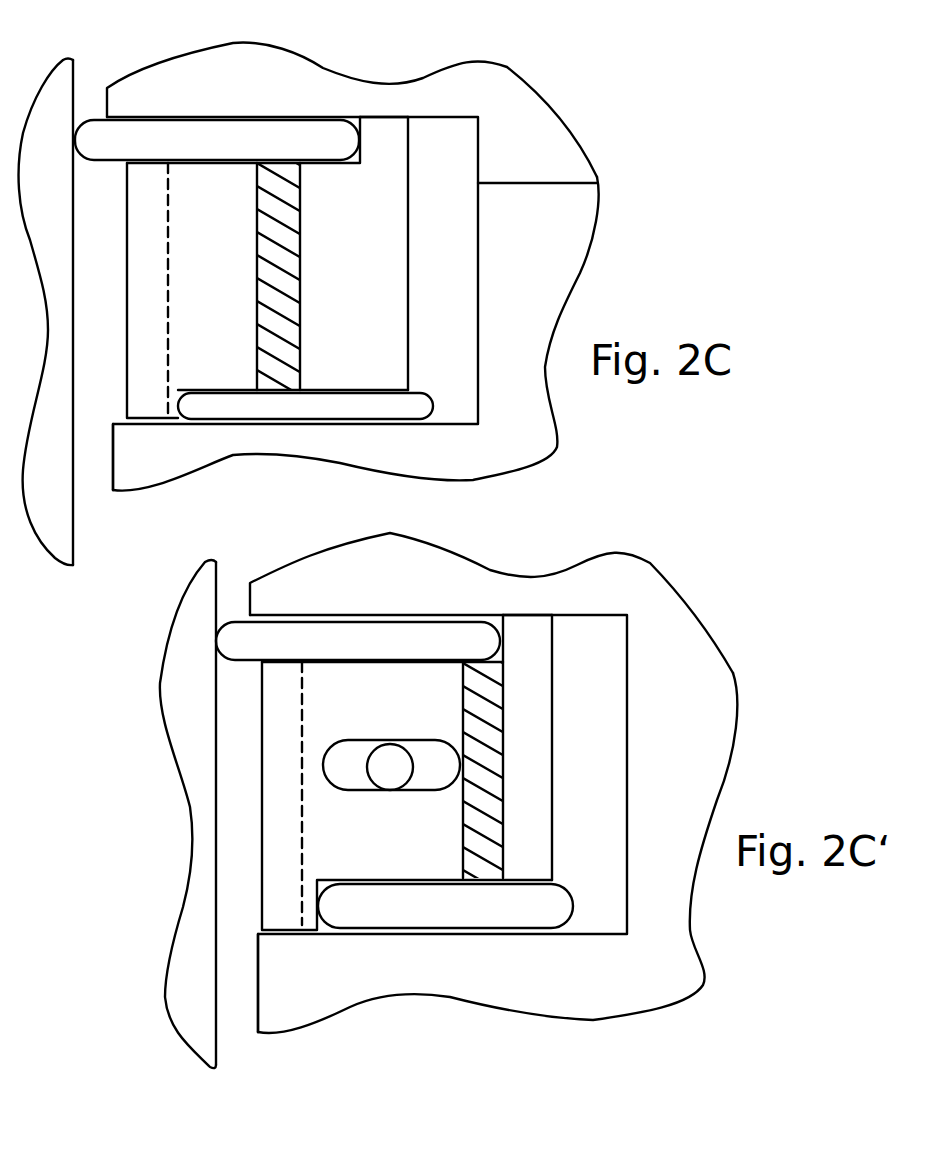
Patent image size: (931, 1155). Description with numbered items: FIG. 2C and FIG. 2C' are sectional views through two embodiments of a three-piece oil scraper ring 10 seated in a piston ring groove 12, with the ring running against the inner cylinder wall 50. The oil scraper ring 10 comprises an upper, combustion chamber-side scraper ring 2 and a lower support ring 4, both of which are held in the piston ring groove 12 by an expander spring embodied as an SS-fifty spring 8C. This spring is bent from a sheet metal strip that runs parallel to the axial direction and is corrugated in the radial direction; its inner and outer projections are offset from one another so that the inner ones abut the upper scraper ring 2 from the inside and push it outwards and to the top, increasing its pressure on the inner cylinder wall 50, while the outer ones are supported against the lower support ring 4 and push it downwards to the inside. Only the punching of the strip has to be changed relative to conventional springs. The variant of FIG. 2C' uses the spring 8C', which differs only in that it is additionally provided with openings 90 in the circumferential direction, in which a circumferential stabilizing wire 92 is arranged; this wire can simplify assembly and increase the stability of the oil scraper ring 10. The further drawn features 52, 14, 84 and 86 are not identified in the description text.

In FIG. 2C, the oil scraper ring 10 is at (613, 60).
In FIG. 2C', the oil scraper ring 10 is at (762, 557).
In FIG. 2C, the inner cylinder wall 50 is at (46, 312).
In FIG. 2C', the inner cylinder wall 50 is at (780, 660).
In FIG. 2C, the housing upper portion 52 is at (352, 110).
In FIG. 2C', the housing upper portion 52 is at (491, 603).
In FIG. 2C, the housing body 14 is at (597, 165).
In FIG. 2C', the housing body 14 is at (497, 853).
In FIG. 2C, the piston ring groove 12 is at (436, 253).
In FIG. 2C', the piston ring groove 12 is at (582, 747).
In FIG. 2C, the upper scraper ring 2 is at (217, 140).
In FIG. 2C', the upper scraper ring 2 is at (359, 642).
In FIG. 2C, the lower support ring 4 is at (305, 404).
In FIG. 2C', the lower support ring 4 is at (535, 907).
In FIG. 2C, the SS-50 spring 8C is at (267, 290).
In FIG. 2C', the chamber (variant) 8C' is at (407, 796).
In FIG. 2C, the column 84 is at (383, 140).
In FIG. 2C', the column 84 is at (528, 633).
In FIG. 2C, the gap 86 is at (132, 412).
In FIG. 2C', the gap 86 is at (287, 913).
In FIG. 2C', the openings 90 is at (425, 760).
In FIG. 2C', the circumferential stabilizing wire 92 is at (393, 762).